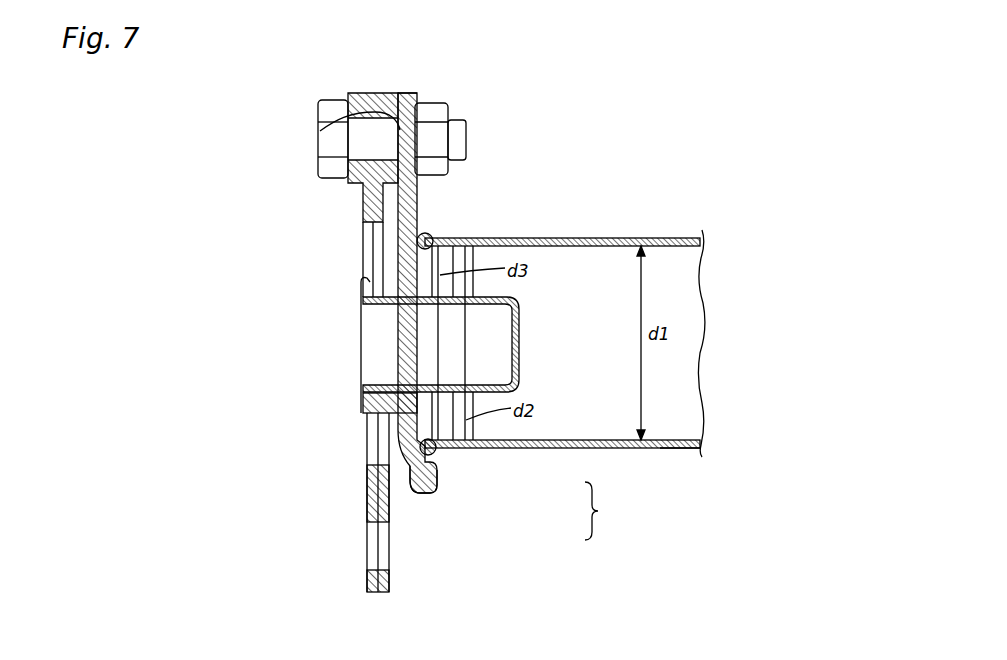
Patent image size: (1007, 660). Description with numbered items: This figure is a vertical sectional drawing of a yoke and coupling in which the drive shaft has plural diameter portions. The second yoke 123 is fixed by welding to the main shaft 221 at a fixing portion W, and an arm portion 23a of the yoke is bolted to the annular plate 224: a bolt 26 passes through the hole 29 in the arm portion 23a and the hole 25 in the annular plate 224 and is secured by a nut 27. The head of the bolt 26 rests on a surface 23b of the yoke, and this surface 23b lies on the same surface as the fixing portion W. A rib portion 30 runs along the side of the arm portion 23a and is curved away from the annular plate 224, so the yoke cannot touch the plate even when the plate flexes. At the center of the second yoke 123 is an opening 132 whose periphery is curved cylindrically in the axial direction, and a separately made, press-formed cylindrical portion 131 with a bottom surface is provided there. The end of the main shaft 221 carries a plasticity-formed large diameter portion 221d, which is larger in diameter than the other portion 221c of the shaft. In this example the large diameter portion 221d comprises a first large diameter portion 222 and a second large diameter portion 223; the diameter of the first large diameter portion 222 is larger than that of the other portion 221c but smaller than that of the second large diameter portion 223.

The arm portion 23a is at (405, 93).
The surface 23b is at (420, 115).
The hole 25 is at (320, 131).
The bolt 26 is at (440, 168).
The nut 27 is at (318, 152).
The hole 29 is at (467, 128).
The rib portion 30 is at (428, 495).
The fixing portion W is at (433, 236).
The second yoke 123 is at (419, 198).
The cylindrical portion 131 is at (507, 297).
The opening 132 is at (368, 385).
The main shaft 221 is at (617, 240).
The other portion 221c is at (672, 449).
The large diameter portion 221d is at (628, 511).
The first large diameter portion 222 is at (440, 450).
The second large diameter portion 223 is at (466, 450).
The annular plate 224 is at (372, 500).